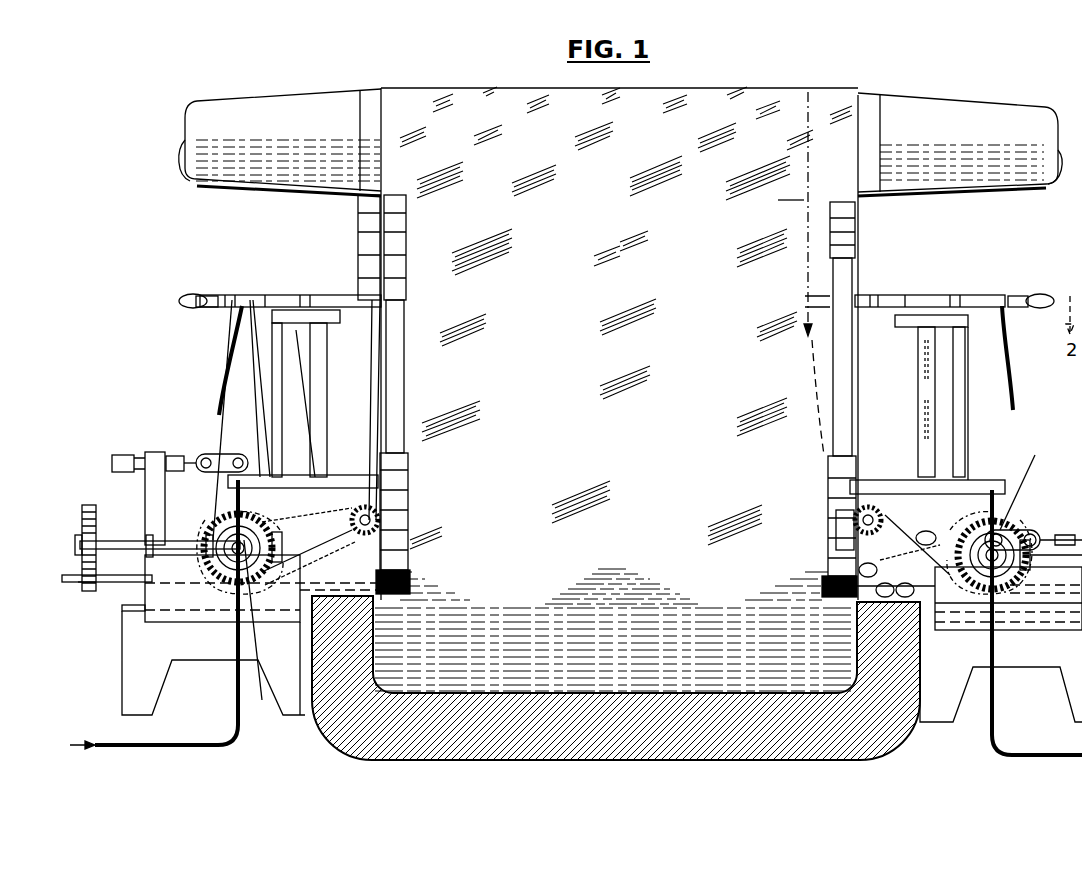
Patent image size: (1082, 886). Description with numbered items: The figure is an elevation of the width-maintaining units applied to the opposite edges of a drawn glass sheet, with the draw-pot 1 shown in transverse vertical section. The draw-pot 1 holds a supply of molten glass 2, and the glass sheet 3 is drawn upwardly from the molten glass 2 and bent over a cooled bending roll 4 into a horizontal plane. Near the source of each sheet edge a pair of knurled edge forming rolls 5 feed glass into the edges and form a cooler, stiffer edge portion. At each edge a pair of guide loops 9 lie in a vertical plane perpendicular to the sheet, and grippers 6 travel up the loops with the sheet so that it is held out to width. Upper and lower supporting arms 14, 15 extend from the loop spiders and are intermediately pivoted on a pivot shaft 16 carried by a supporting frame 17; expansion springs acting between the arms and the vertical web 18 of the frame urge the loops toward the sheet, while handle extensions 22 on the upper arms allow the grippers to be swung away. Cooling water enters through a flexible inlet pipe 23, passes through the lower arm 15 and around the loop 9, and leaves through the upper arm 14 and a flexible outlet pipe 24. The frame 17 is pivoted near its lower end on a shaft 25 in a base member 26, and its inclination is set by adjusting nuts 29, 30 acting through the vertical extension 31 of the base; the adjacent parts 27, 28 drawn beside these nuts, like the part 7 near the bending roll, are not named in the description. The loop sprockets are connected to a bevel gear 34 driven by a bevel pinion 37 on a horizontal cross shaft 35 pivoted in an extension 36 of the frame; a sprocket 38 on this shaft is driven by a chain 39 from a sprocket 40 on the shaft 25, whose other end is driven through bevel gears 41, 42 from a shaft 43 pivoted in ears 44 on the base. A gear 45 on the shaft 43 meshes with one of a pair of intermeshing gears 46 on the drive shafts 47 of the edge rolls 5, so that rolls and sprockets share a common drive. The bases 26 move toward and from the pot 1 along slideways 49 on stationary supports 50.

The draw-pot 1 is at (320, 735).
The molten glass 2 is at (615, 630).
The glass sheet 3 is at (619, 343).
The bending roll 4 is at (915, 113).
The edge forming rolls 5 is at (410, 578).
The grippers 6 is at (828, 462).
The guide 7 is at (786, 199).
The guide loops 9 is at (832, 390).
The upper supporting arms 14 is at (880, 300).
The lower supporting arms 15 is at (880, 493).
The pivot shaft 16 is at (918, 410).
The supporting frame 17 is at (962, 440).
The vertical web 18 is at (1000, 457).
The handle extensions 22 is at (213, 295).
The flexible inlet pipe 23 is at (175, 746).
The flexible outlet pipe 24 is at (220, 400).
The shaft 25 is at (258, 670).
The base member 26 is at (148, 590).
The link 27 is at (192, 470).
The rod 28 is at (215, 455).
The adjusting nut 29 is at (170, 453).
The adjusting nut 30 is at (140, 453).
The vertical extension 31 is at (147, 493).
The bevel gear 34 is at (372, 505).
The horizontal cross shaft 35 is at (838, 528).
The extension of frame 36 is at (915, 545).
The bevel pinion 37 is at (863, 565).
The sprocket 38 is at (892, 586).
The chain 39 is at (317, 546).
The sprocket 40 is at (928, 536).
The bevel gear 41 is at (233, 556).
The bevel gear 42 is at (215, 532).
The shaft 43 is at (118, 541).
The ears 44 is at (148, 537).
The gear 45 is at (82, 521).
The intermeshing gears 46 is at (80, 590).
The drive shafts 47 is at (66, 577).
The slideways 49 is at (125, 612).
The stationary supports 50 is at (135, 659).